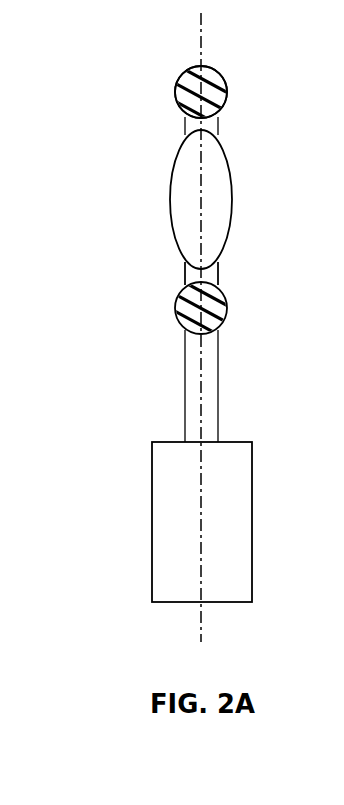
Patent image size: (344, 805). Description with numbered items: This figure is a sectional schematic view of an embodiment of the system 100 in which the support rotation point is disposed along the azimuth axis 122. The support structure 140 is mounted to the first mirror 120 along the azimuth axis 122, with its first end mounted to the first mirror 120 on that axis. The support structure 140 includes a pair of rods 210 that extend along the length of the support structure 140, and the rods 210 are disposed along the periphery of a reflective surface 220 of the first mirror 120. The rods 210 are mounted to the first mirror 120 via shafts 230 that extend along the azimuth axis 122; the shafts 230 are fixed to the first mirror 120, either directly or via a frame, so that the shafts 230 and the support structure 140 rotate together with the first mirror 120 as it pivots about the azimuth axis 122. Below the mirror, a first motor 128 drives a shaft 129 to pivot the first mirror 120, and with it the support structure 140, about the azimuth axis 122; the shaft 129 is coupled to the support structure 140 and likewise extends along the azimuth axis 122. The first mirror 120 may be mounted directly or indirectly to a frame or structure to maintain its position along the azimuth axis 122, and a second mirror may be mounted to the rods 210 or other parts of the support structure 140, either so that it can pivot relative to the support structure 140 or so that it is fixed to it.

The system 100 is at (97, 54).
The first mirror 120 is at (235, 172).
The azimuth axis 122 is at (205, 42).
The first motor 128 is at (151, 522).
The shaft 129 is at (186, 394).
The support structure 140 is at (164, 97).
The rods 210 is at (226, 91).
The reflective surface 220 is at (217, 163).
The shafts 230 is at (219, 278).